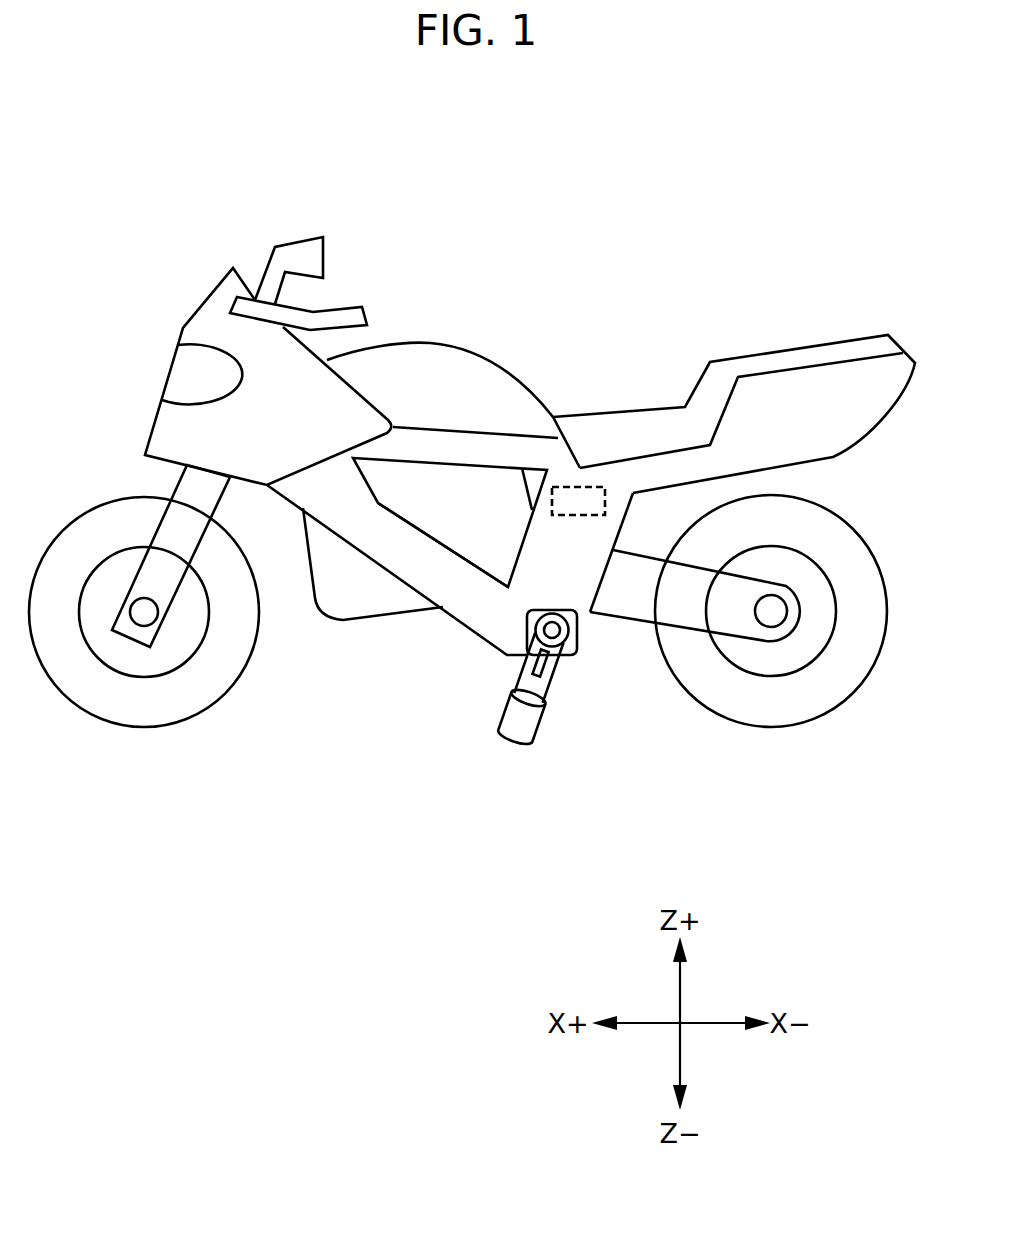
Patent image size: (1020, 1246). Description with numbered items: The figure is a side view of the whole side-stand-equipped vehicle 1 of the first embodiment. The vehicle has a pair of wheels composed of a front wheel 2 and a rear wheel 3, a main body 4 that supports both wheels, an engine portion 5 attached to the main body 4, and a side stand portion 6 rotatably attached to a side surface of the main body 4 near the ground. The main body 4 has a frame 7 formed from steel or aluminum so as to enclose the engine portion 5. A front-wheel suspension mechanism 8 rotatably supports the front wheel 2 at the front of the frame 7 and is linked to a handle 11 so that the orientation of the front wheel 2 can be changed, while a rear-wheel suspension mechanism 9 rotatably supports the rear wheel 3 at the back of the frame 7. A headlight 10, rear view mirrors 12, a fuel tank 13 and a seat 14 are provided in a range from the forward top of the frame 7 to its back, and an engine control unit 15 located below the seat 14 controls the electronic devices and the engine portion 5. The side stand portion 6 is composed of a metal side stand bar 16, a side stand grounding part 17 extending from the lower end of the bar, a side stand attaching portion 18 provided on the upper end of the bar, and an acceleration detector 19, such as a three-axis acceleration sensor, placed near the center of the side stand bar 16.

The side-stand-equipped vehicle 1 is at (690, 252).
The front wheel 2 is at (148, 710).
The rear wheel 3 is at (823, 702).
The main body 4 is at (440, 635).
The engine portion 5 is at (337, 585).
The side stand portion 6 is at (482, 765).
The frame 7 is at (417, 563).
The front-wheel suspension mechanism 8 is at (190, 492).
The rear-wheel suspension mechanism 9 is at (702, 612).
The headlight 10 is at (185, 378).
The handle 11 is at (350, 310).
The rear view mirrors 12 is at (312, 246).
The fuel tank 13 is at (455, 362).
The seat 14 is at (723, 373).
The engine control unit (ECU) 15 is at (598, 497).
The side stand bar 16 is at (528, 685).
The side stand grounding part 17 is at (533, 720).
The side stand attaching portion 18 is at (594, 629).
The acceleration detector 19 is at (550, 660).